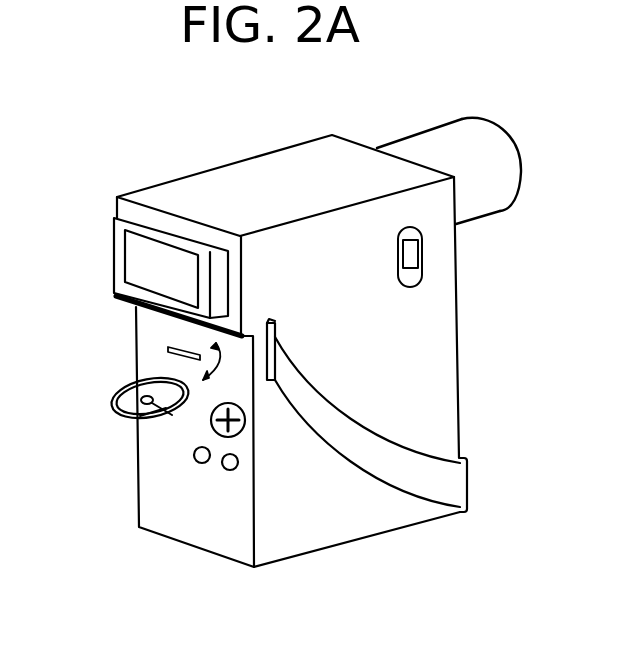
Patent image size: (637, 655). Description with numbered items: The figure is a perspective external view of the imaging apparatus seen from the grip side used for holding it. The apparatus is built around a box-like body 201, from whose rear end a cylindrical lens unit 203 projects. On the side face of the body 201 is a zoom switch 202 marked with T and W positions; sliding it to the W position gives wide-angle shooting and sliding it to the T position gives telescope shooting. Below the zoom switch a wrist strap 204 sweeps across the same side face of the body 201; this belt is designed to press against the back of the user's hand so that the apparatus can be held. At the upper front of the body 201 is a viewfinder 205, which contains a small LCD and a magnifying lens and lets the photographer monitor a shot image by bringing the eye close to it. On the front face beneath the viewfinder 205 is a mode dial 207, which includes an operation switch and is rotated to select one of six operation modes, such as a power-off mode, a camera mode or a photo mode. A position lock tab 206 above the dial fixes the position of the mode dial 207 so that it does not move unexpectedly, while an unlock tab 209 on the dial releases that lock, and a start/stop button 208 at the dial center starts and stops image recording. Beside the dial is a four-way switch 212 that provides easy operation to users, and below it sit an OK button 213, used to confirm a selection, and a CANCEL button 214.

The body 201 is at (427, 393).
The zoom switch 202 is at (412, 288).
The lens unit 203 is at (493, 175).
The wrist strap 204 is at (440, 485).
The viewfinder 205 is at (146, 266).
The position lock tab 206 is at (168, 350).
The mode dial 207 is at (125, 414).
The start/stop button 208 is at (142, 398).
The unlock tab 209 is at (162, 408).
The four-way switch 212 is at (213, 428).
The OK button 213 is at (195, 461).
The CANCEL button 214 is at (224, 468).